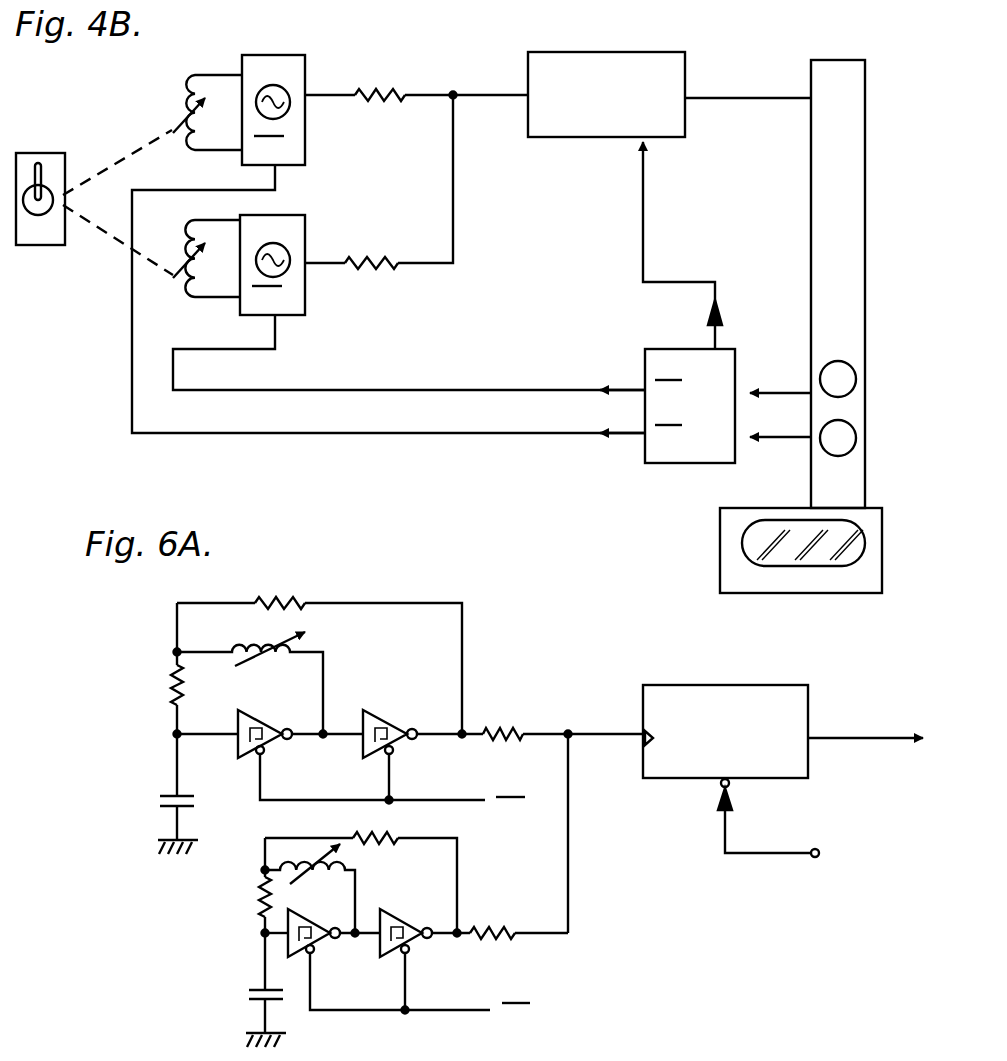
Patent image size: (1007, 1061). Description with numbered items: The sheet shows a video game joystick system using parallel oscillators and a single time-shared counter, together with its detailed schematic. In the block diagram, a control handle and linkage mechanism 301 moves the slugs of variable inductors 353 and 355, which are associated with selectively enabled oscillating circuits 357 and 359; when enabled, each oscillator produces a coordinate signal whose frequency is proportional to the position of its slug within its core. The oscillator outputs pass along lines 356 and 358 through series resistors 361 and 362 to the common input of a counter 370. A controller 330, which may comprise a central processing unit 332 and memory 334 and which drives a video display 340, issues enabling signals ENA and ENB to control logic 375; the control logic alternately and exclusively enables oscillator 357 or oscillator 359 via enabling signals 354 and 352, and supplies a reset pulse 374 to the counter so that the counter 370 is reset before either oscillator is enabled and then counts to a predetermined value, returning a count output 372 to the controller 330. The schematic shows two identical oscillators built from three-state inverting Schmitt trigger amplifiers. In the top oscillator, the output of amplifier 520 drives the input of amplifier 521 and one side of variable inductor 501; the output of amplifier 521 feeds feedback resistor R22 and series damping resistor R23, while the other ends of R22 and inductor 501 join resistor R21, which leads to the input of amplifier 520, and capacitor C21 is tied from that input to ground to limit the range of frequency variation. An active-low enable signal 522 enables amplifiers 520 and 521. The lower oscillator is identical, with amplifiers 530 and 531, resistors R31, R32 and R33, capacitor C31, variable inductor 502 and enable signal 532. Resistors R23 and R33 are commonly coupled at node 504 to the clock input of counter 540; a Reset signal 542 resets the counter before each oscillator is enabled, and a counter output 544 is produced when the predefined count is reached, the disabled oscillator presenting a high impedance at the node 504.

In FIG. 4B, the control handle and linkage mechanism 301 is at (42, 248).
In FIG. 4B, the variable inductor 353 is at (180, 100).
In FIG. 4B, the variable inductor 355 is at (182, 287).
In FIG. 4B, the oscillating circuit 357 is at (247, 55).
In FIG. 4B, the oscillating circuit 359 is at (312, 208).
In FIG. 4B, the oscillator output line 356 is at (340, 97).
In FIG. 4B, the oscillator output line 358 is at (335, 265).
In FIG. 4B, the series resistor 361 is at (405, 62).
In FIG. 4B, the series resistor 362 is at (400, 232).
In FIG. 4B, the counter 370 is at (590, 32).
In FIG. 4B, the count output 372 is at (708, 100).
In FIG. 4B, the reset pulse 374 is at (643, 235).
In FIG. 4B, the control logic 375 is at (645, 458).
In FIG. 4B, the controller 330 is at (822, 60).
In FIG. 4B, the central processing unit 332 is at (858, 373).
In FIG. 4B, the memory 334 is at (858, 436).
In FIG. 4B, the video display 340 is at (720, 540).
In FIG. 4B, the enabling signal 352 is at (372, 362).
In FIG. 4B, the enabling signal 354 is at (395, 408).
In FIG. 6A, the variable inductor 501 is at (243, 636).
In FIG. 6A, the variable inductor 502 is at (312, 842).
In FIG. 6A, the Schmitt trigger amplifier 520 is at (282, 698).
In FIG. 6A, the Schmitt trigger amplifier 521 is at (405, 692).
In FIG. 6A, the enable signal ENA-bar 522 is at (462, 778).
In FIG. 6A, the Schmitt trigger amplifier 530 is at (325, 898).
In FIG. 6A, the Schmitt trigger amplifier 531 is at (425, 893).
In FIG. 6A, the enable signal ENB-bar 532 is at (483, 982).
In FIG. 6A, the node 504 is at (625, 716).
In FIG. 6A, the counter 540 is at (703, 660).
In FIG. 6A, the Reset signal 542 is at (800, 828).
In FIG. 6A, the counter output 544 is at (890, 700).
In FIG. 6A, the resistor R21 is at (172, 676).
In FIG. 6A, the feedback resistor R22 is at (319, 647).
In FIG. 6A, the series damping resistor R23 is at (561, 718).
In FIG. 6A, the resistor R31 is at (260, 890).
In FIG. 6A, the feedback resistor R32 is at (361, 870).
In FIG. 6A, the series damping resistor R33 is at (519, 918).
In FIG. 6A, the damping capacitor C21 is at (158, 800).
In FIG. 6A, the damping capacitor C31 is at (248, 994).